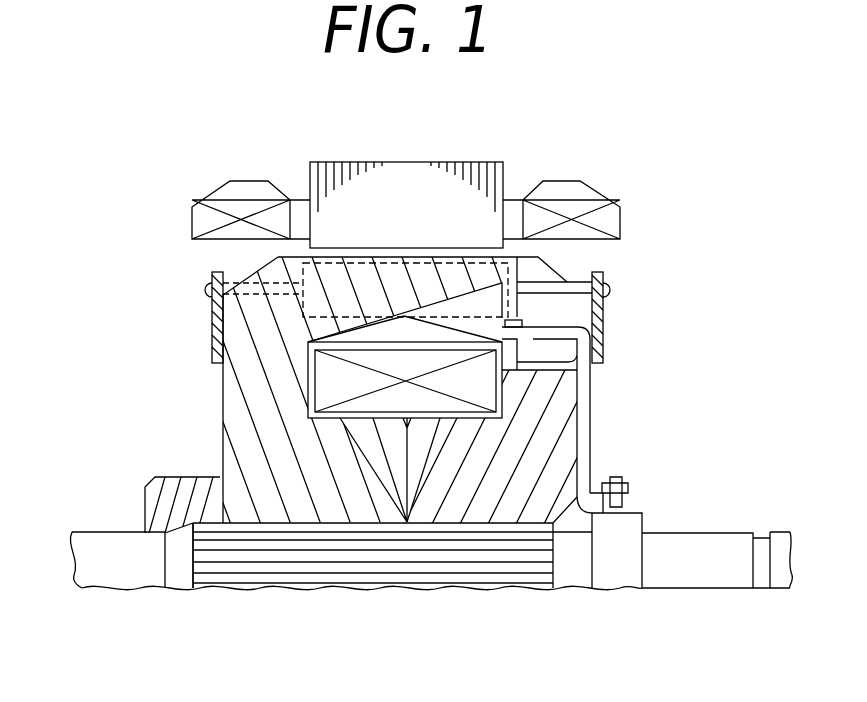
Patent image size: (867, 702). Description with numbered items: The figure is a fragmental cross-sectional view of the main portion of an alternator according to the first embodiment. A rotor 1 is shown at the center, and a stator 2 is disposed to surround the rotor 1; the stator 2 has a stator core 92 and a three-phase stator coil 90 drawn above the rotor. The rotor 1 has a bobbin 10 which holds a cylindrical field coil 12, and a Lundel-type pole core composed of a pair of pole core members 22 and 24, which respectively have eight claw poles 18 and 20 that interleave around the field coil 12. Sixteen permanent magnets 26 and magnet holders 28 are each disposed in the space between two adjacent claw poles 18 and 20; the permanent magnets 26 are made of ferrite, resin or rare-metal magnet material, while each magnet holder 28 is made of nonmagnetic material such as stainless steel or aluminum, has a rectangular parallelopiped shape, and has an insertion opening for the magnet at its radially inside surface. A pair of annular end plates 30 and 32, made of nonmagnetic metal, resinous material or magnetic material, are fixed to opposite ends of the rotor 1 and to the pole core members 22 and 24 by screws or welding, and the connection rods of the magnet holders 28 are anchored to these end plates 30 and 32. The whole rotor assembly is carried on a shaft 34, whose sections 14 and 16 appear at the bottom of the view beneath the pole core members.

The rotor 1 is at (148, 256).
The stator 2 is at (415, 159).
The bobbin 10 is at (480, 378).
The field coil 12 is at (530, 365).
The left body portion 14 is at (337, 510).
The right body portion 16 is at (487, 513).
The claw poles 18 is at (323, 330).
The claw poles 20 is at (517, 316).
The pole core member 22 is at (245, 440).
The pole core member 24 is at (553, 463).
The permanent magnets 26 is at (368, 270).
The magnet holders 28 is at (547, 283).
The annular end plate 30 is at (213, 330).
The annular end plate 32 is at (601, 338).
The shaft 34 is at (700, 567).
The three-phase stator coil 90 is at (590, 193).
The stator core 92 is at (352, 160).